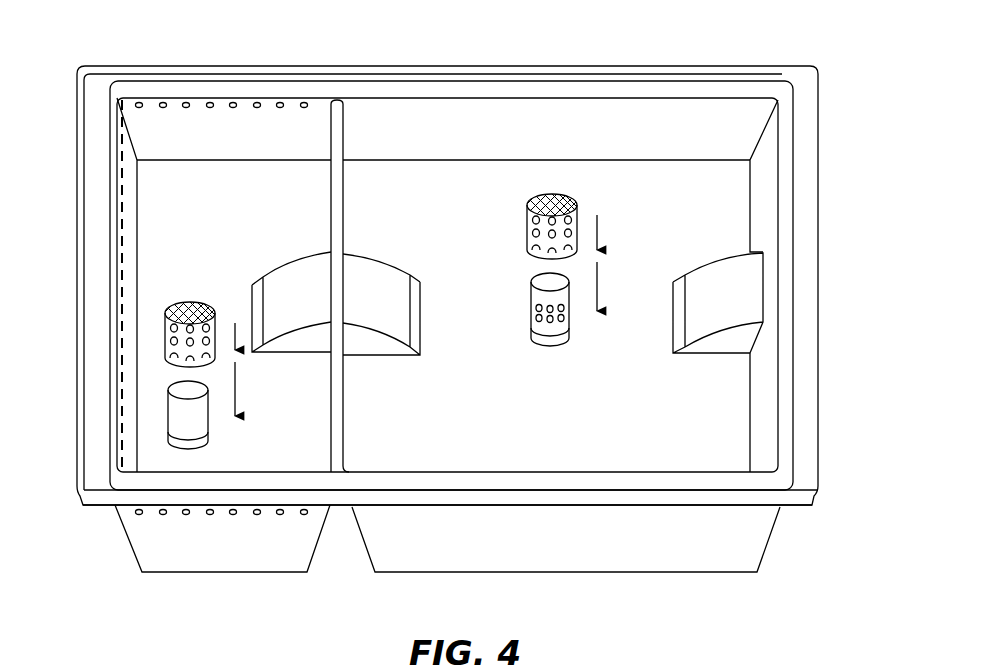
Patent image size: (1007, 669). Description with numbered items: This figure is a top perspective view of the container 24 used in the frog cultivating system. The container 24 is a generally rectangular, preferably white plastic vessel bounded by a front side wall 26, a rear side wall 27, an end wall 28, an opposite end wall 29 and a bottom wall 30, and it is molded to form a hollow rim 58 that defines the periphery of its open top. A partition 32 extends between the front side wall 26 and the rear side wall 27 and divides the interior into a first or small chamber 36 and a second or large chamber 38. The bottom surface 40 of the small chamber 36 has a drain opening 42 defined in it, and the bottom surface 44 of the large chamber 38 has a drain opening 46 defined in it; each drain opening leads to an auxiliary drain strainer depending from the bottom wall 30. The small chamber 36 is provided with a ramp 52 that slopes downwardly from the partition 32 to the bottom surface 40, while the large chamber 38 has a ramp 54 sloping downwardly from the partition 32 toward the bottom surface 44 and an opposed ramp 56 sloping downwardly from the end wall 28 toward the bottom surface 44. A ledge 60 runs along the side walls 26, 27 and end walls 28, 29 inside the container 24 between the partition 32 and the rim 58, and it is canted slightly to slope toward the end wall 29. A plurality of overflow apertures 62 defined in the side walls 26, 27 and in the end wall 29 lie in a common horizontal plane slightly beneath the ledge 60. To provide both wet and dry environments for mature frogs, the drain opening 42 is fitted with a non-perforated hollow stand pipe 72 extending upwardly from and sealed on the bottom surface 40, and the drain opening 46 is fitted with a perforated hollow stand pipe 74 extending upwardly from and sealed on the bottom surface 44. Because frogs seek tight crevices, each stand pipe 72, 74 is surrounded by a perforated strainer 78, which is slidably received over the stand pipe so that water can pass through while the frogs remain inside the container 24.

The container 24 is at (610, 54).
The front side wall 26 is at (630, 557).
The rear side wall 27 is at (515, 120).
The end wall 28 is at (818, 160).
The end wall 29 is at (80, 383).
The bottom wall 30 is at (207, 573).
The partition 32 is at (332, 450).
The small chamber 36 is at (188, 227).
The large chamber 38 is at (700, 227).
The bottom surface 40 is at (266, 220).
The drain opening 42 is at (193, 442).
The bottom surface 44 is at (399, 220).
The drain opening 46 is at (567, 333).
The ramp 52 is at (295, 345).
The ramp 54 is at (370, 345).
The opposed ramp 56 is at (707, 345).
The rim 58 is at (805, 477).
The ledge 60 is at (418, 102).
The overflow apertures 62 is at (205, 105).
The non-perforated hollow stand pipe 72 is at (200, 423).
The perforated hollow stand pipe 74 is at (538, 300).
The perforated strainer 78 is at (212, 328).